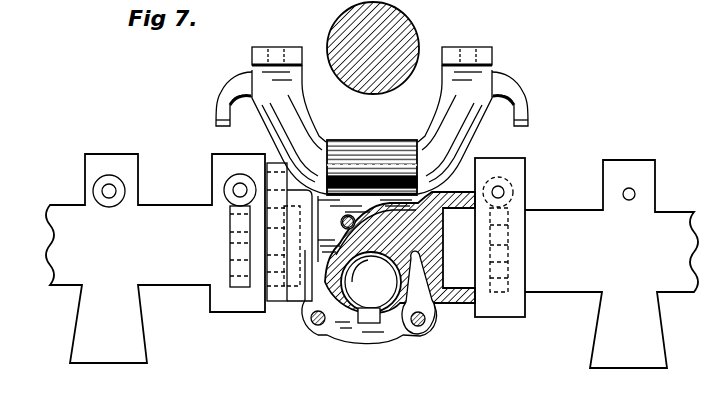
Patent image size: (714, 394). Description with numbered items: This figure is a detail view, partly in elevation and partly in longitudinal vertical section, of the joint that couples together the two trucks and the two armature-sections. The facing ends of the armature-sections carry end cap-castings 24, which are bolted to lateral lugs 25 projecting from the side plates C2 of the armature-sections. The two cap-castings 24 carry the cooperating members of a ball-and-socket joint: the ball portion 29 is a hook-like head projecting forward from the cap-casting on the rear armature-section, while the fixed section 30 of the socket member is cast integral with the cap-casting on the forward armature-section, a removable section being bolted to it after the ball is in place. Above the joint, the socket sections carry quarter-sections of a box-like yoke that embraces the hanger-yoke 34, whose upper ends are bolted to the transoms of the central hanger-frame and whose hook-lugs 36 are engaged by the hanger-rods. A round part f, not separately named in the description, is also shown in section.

The rod f is at (383, 32).
The side plates C2 is at (184, 192).
The lateral lugs 25 is at (240, 242).
The hanger-yoke 34 is at (448, 125).
The hook-lugs 36 is at (221, 99).
The end cap-castings 24 is at (295, 277).
The fixed section of socket member 30 is at (303, 299).
The ball portion 29 is at (460, 352).